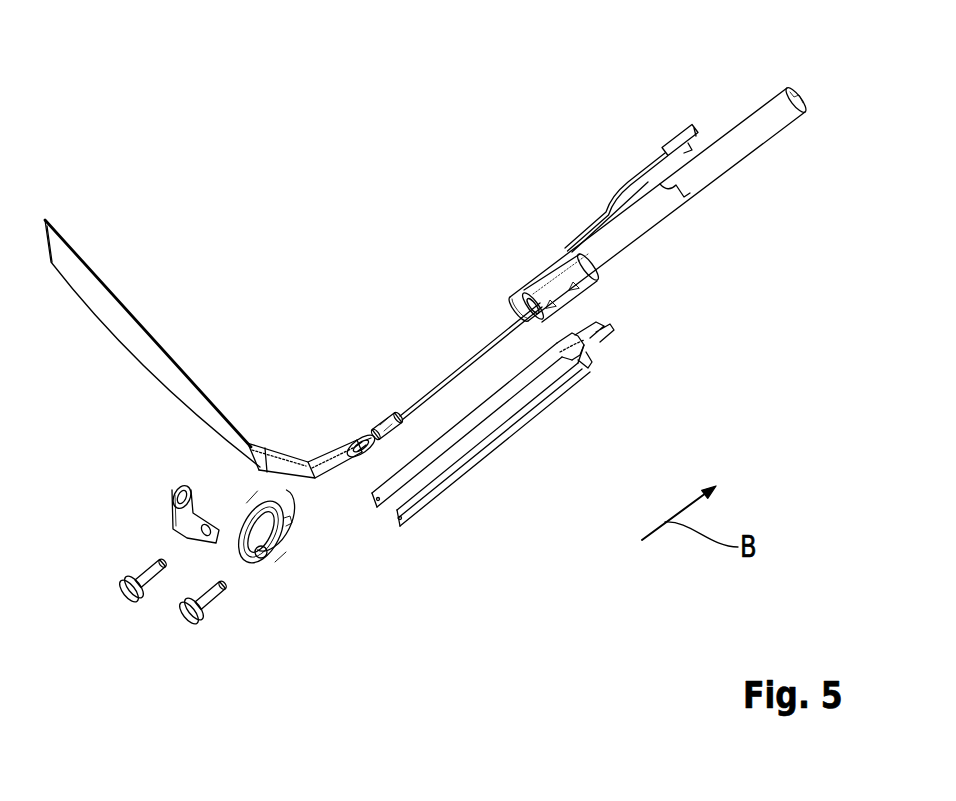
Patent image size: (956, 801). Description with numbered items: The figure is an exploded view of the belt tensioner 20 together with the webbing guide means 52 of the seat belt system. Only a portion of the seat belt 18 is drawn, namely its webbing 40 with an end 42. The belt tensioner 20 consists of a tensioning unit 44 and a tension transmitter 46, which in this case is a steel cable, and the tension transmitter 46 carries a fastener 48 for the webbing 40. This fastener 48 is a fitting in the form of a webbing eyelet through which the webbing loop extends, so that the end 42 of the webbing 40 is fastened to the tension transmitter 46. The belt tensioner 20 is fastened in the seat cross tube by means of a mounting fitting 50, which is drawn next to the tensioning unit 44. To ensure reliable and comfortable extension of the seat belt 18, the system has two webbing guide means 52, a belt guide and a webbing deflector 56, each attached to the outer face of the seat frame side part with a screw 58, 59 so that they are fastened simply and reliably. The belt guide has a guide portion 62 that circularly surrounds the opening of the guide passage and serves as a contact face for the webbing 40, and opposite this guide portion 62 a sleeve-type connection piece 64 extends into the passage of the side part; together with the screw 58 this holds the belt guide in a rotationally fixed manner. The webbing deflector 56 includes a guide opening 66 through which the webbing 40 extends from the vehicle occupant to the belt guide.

The seat belt 18 is at (72, 212).
The belt tensioner 20 is at (514, 136).
The webbing 40 is at (152, 355).
The end 42 is at (312, 458).
The tensioning unit 44 is at (735, 165).
The tension transmitter 46 is at (462, 365).
The fastener 48 is at (368, 432).
The mounting fitting 50 is at (533, 408).
The webbing guide means 52 is at (280, 556).
The webbing deflector 56 is at (170, 532).
The screw 58 is at (188, 612).
The screw 59 is at (130, 594).
The guide portion 62 is at (248, 552).
The sleeve-type connection piece 64 is at (282, 508).
The guide opening 66 is at (172, 500).